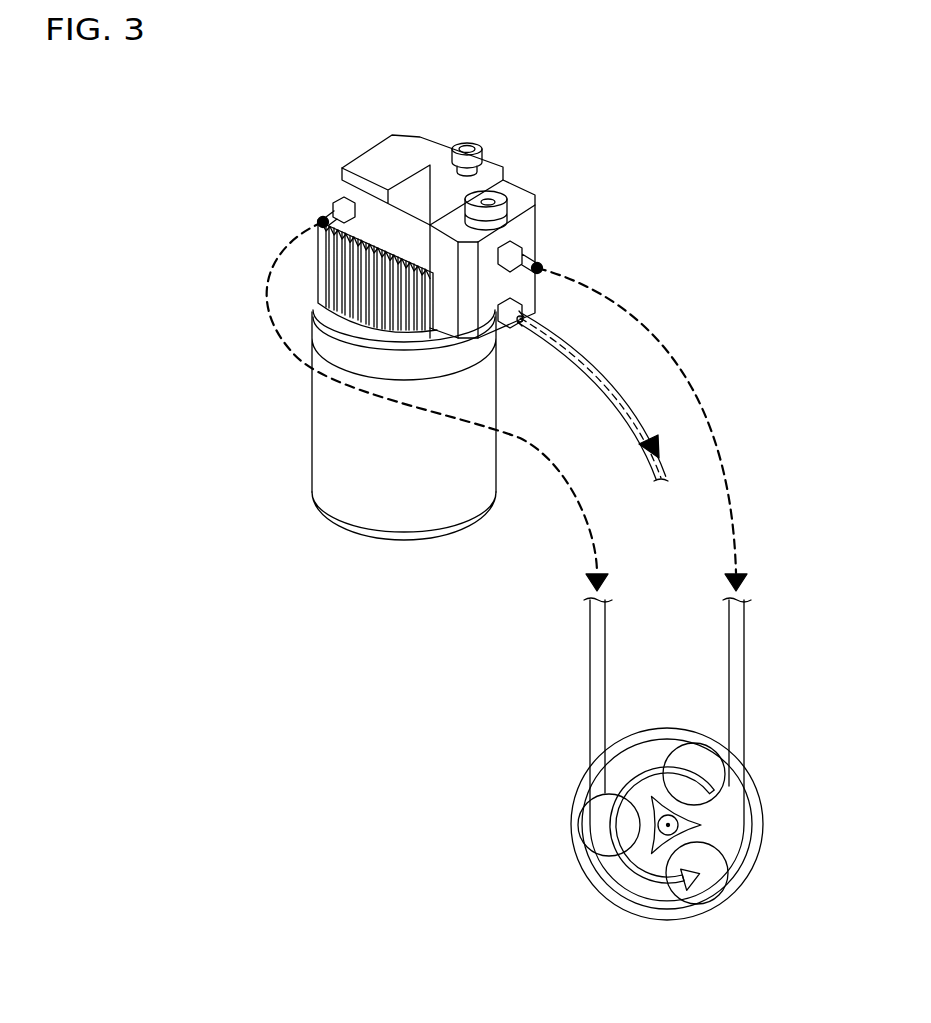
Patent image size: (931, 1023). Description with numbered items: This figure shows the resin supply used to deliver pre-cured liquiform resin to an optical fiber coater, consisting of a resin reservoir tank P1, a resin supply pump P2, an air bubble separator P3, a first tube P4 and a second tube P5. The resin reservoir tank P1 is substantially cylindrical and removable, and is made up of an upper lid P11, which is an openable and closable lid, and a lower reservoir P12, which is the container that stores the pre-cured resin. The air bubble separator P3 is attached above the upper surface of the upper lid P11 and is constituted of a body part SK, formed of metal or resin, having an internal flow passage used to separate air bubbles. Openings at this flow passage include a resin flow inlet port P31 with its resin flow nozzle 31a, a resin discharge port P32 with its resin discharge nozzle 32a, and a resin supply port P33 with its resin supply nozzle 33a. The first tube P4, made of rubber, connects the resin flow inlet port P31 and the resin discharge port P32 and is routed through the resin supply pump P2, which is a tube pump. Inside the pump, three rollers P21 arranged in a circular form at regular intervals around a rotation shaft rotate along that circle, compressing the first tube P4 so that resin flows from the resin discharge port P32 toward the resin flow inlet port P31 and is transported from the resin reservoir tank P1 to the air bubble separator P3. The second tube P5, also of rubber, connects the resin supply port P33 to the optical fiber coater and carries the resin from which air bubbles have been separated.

The resin reservoir tank P1 is at (312, 432).
The upper lid P11 is at (317, 268).
The lower reservoir P12 is at (312, 480).
The resin supply pump P2 is at (757, 782).
The rollers P21 is at (693, 757).
The air bubble separator P3 is at (430, 137).
The body part SK is at (522, 190).
The resin flow inlet port P31 is at (528, 248).
The resin flow nozzle 31a is at (541, 265).
The resin discharge port P32 is at (340, 200).
The resin discharge nozzle 32a is at (319, 218).
The resin supply port P33 is at (503, 330).
The resin supply nozzle 33a is at (522, 323).
The first tube P4 is at (747, 634).
The second tube P5 is at (641, 418).